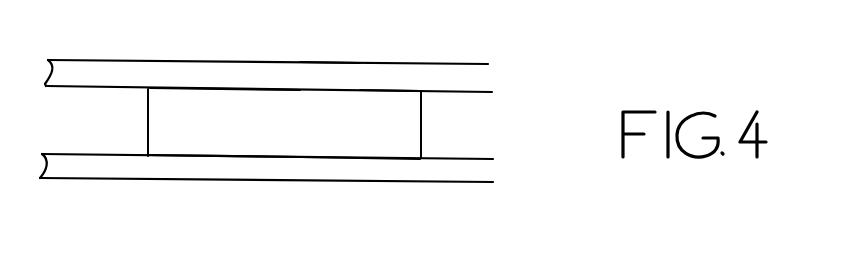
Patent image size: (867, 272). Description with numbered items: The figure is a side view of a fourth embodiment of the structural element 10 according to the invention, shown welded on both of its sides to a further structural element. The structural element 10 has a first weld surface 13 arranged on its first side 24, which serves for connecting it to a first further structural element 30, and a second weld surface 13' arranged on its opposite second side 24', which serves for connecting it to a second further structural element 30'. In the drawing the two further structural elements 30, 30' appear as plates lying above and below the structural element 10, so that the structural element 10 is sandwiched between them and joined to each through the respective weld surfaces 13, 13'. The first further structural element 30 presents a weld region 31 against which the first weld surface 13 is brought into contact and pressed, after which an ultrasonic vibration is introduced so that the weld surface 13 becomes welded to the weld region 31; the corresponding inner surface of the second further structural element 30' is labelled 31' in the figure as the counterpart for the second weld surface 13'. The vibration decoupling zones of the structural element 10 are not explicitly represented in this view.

The structural element 10 is at (414, 122).
The first weld surface 13 is at (354, 56).
The second weld surface 13' is at (341, 202).
The first side 24 is at (423, 55).
The second side 24' is at (416, 200).
The first further structural element 30 is at (310, 73).
The second further structural element 30' is at (310, 174).
The weld region 31 is at (225, 160).
The inner surface 31' is at (225, 81).